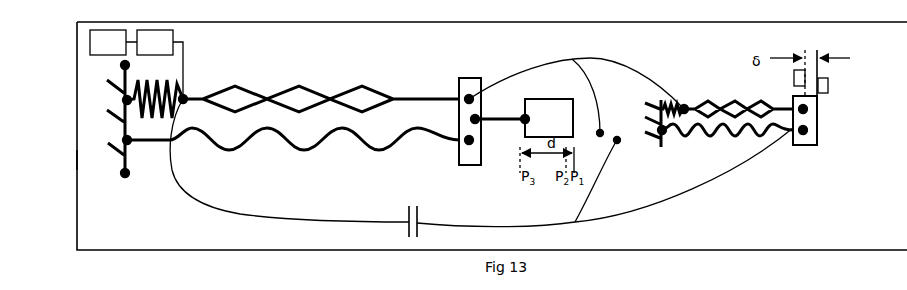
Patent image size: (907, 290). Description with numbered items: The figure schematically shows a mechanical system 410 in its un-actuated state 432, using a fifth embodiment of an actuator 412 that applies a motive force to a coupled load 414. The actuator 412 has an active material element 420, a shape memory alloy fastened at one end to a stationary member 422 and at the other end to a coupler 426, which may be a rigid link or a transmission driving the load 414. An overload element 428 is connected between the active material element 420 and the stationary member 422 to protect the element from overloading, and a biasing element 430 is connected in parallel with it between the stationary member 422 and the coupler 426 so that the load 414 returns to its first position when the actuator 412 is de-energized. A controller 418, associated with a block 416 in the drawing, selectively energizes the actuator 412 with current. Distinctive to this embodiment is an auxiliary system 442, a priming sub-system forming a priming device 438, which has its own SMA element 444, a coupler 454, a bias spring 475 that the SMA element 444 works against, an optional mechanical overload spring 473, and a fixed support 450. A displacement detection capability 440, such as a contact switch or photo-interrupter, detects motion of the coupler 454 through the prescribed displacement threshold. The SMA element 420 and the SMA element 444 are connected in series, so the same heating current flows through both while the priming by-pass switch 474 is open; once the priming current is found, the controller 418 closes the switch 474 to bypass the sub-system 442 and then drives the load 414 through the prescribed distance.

The mechanical system 410 is at (77, 80).
The actuator 412 is at (321, 74).
The load 414 is at (524, 118).
The power source 416 is at (108, 42).
The controller 418 is at (154, 64).
The active material element 420 is at (338, 94).
The stationary member 422 is at (128, 176).
The coupler 426 is at (462, 78).
The overload element 428 is at (152, 120).
The biasing element 430 is at (303, 143).
The un-actuated state 432 is at (66, 161).
The priming device 438 is at (537, 58).
The displacement detection capability 440 is at (829, 87).
The auxiliary system 442 is at (719, 76).
The SMA element 444 is at (676, 45).
The second fixed support 450 is at (666, 141).
The coupler 454 is at (805, 146).
The mechanical overload spring 473 is at (675, 107).
The priming by-pass switch 474 is at (615, 143).
The bias spring 475 is at (716, 134).